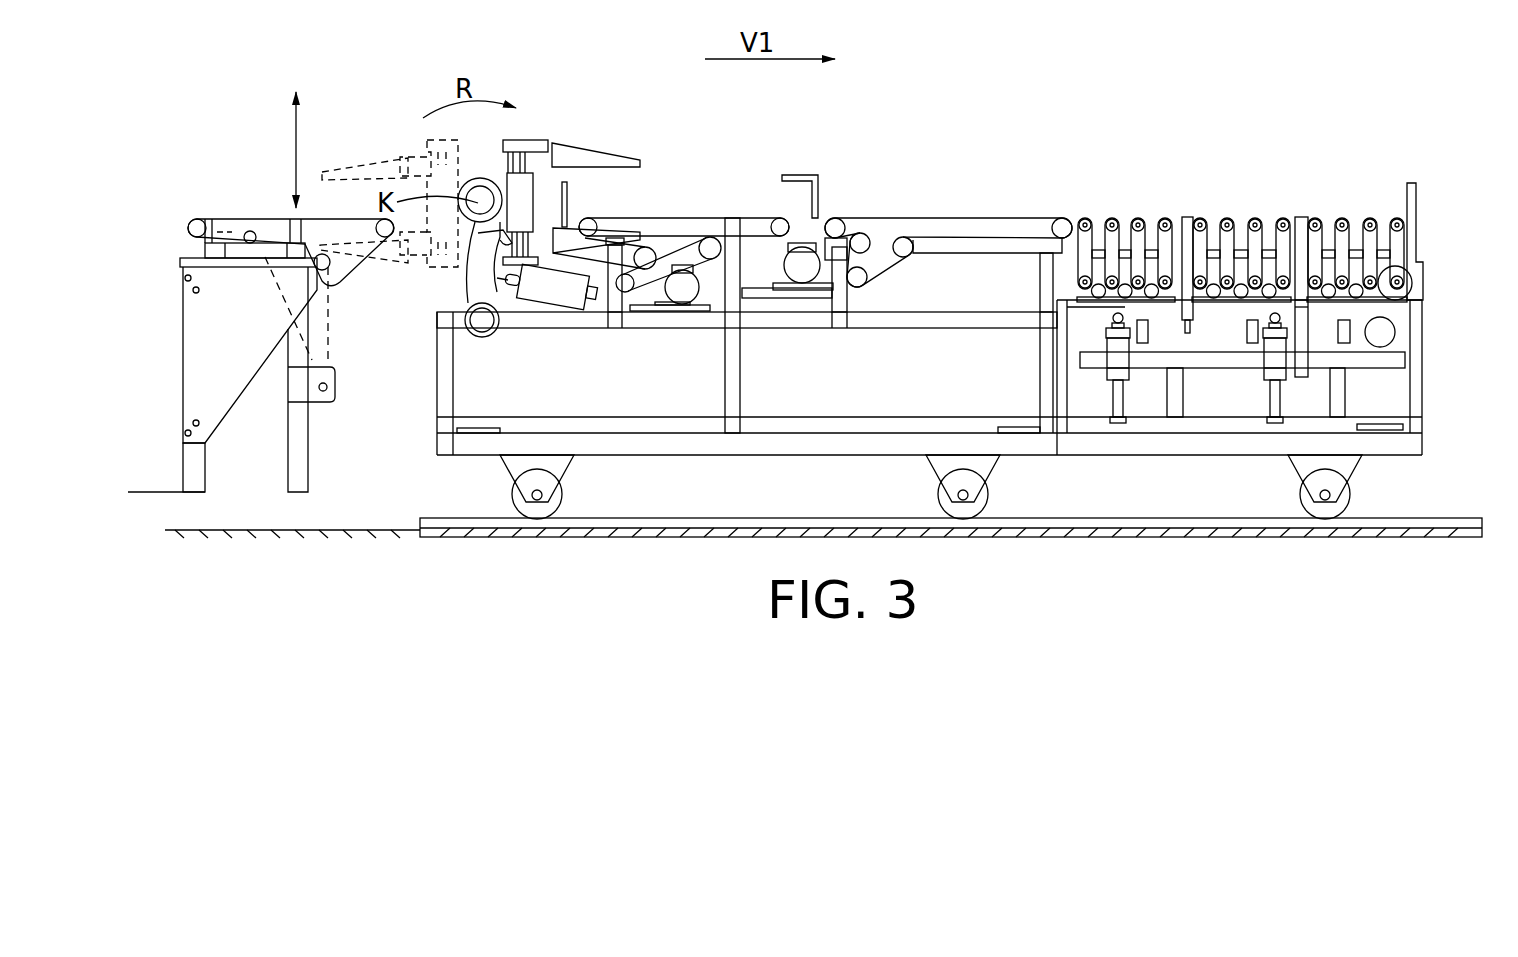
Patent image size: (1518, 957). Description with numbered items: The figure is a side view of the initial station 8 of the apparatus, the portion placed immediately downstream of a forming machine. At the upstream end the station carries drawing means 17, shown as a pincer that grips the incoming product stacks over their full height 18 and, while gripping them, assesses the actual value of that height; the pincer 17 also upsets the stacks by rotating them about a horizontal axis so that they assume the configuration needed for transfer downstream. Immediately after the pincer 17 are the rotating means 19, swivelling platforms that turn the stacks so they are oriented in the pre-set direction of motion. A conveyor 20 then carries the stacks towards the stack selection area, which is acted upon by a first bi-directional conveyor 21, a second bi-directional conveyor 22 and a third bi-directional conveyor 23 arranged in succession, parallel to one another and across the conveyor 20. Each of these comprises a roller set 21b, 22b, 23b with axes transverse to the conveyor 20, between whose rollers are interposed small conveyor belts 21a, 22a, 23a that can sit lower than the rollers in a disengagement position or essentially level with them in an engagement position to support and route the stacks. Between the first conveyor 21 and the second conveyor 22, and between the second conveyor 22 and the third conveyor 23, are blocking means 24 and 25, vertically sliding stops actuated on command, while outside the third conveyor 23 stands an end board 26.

The initial station 8 is at (238, 215).
The drawing means 17 is at (540, 130).
The full height 18 is at (278, 150).
The rotating means 19 is at (802, 238).
The conveyor 20 is at (993, 215).
The first bi-directional conveyor 21 is at (1122, 208).
The small conveyor belts 21a is at (1140, 220).
The roller set 21b is at (1112, 220).
The second bi-directional conveyor 22 is at (1250, 208).
The small conveyor belts 22a is at (1256, 220).
The roller set 22b is at (1228, 220).
The third bi-directional conveyor 23 is at (1352, 208).
The small conveyor belts 23a is at (1372, 220).
The roller set 23b is at (1378, 216).
The blocking means 24 is at (1192, 332).
The blocking means 25 is at (1305, 337).
The end board 26 is at (1415, 213).